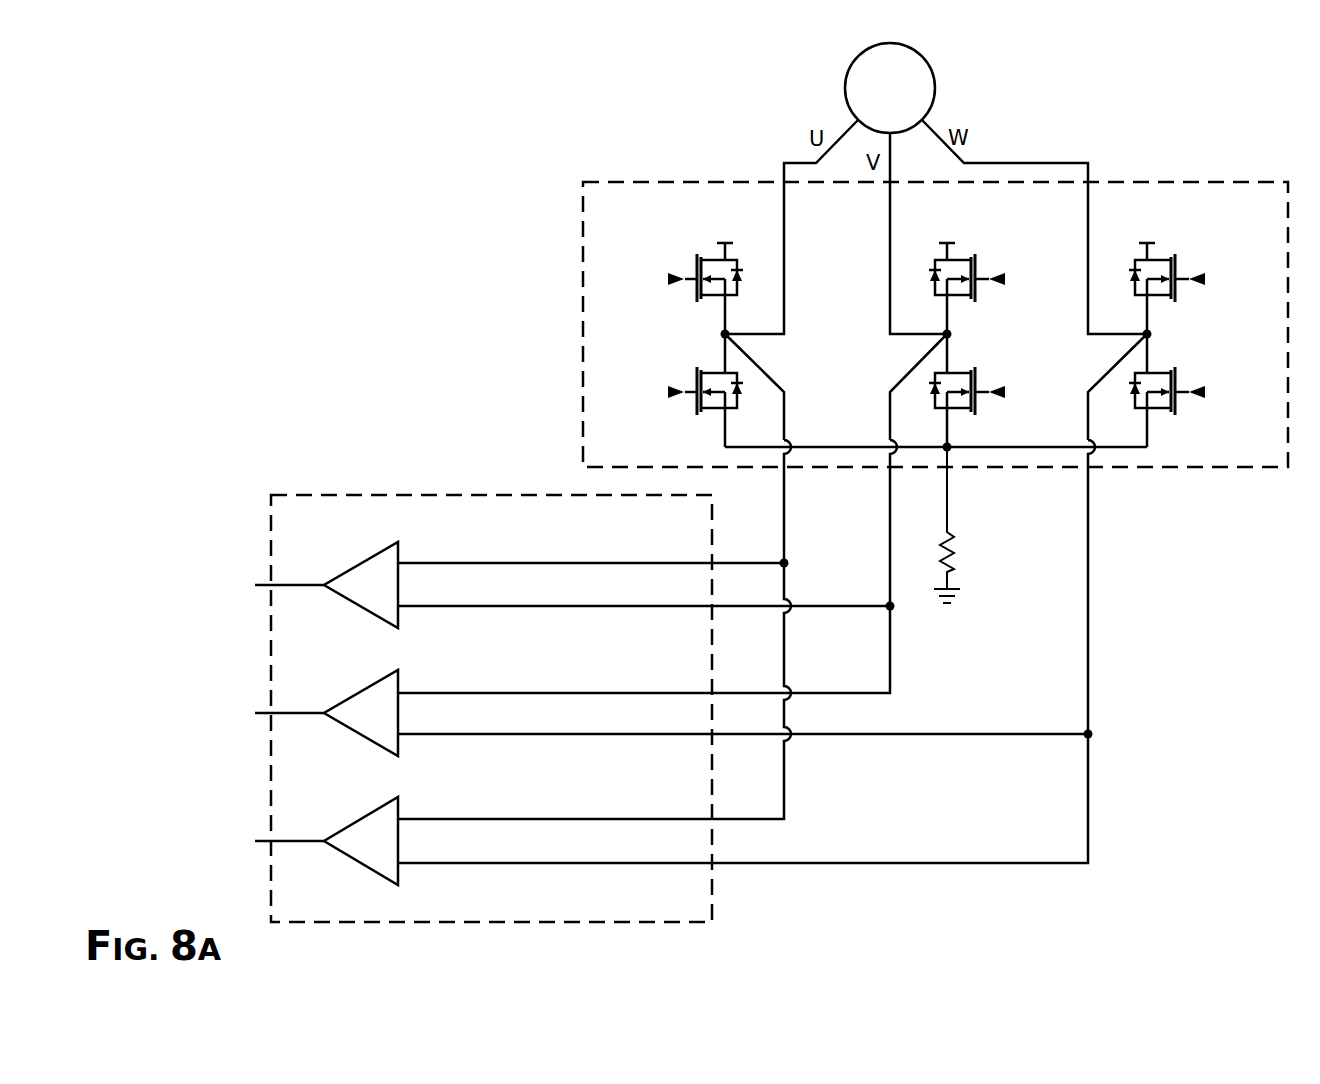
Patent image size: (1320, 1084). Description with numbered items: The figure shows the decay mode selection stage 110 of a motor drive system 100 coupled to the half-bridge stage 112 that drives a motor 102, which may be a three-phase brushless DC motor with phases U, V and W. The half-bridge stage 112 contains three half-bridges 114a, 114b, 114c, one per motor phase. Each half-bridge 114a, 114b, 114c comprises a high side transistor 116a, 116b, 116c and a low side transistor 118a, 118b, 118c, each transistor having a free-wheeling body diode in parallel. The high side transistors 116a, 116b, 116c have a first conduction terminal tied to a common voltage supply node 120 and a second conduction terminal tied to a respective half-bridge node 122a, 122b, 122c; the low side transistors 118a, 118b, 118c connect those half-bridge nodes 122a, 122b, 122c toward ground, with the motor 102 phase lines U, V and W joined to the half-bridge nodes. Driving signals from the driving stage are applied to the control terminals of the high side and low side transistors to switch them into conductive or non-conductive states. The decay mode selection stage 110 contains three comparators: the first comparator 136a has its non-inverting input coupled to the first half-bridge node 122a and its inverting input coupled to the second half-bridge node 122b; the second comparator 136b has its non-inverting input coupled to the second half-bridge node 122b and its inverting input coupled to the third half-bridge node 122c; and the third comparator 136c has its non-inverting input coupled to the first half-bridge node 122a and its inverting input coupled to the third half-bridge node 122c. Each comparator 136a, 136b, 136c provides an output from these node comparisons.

The system 100 is at (1196, 102).
The motor 102 is at (936, 85).
The decay mode selection stage 110 is at (420, 494).
The half-bridge stage 112 is at (1177, 468).
The half-bridge 114a is at (645, 230).
The half-bridge 114b is at (1022, 230).
The half-bridge 114c is at (1150, 193).
The high side transistor 116a is at (712, 297).
The high side transistor 116b is at (960, 297).
The high side transistor 116c is at (1160, 297).
The low side transistor 118a is at (712, 410).
The low side transistor 118b is at (960, 410).
The low side transistor 118c is at (1160, 410).
The voltage supply node 120 is at (725, 243).
The half-bridge node 122a is at (729, 335).
The half-bridge node 122b is at (944, 338).
The half-bridge node 122c is at (1144, 337).
The first comparator 136a is at (357, 562).
The second comparator 136b is at (357, 690).
The third comparator 136c is at (357, 818).